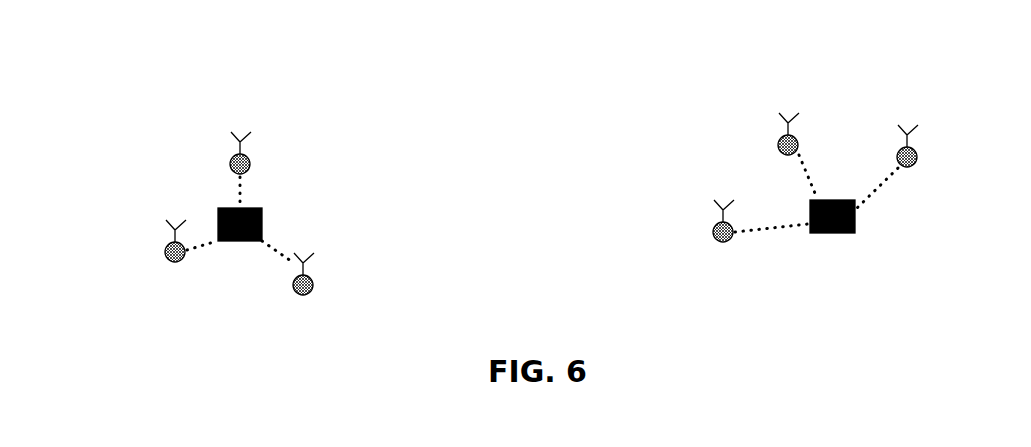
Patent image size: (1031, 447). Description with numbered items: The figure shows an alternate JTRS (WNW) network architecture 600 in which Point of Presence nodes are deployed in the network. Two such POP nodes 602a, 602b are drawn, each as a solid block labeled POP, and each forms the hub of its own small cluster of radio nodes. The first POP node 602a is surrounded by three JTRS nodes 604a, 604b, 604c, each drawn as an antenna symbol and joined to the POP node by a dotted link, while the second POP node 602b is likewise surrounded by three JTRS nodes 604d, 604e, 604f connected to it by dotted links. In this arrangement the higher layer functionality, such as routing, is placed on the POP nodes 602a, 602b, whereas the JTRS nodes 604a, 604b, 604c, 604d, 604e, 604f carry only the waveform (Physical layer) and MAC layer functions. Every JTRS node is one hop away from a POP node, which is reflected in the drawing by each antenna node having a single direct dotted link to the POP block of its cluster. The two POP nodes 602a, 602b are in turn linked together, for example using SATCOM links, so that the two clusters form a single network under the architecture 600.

The alternate JTRS (WNW) architecture 600 is at (825, 60).
The Point of Presence (POP) node 602a is at (238, 241).
The Point of Presence (POP) node 602b is at (837, 233).
The JTRS node 604a is at (248, 158).
The JTRS node 604b is at (313, 291).
The JTRS node 604c is at (166, 259).
The JTRS node 604d is at (915, 149).
The JTRS node 604e is at (797, 139).
The JTRS node 604f is at (714, 238).